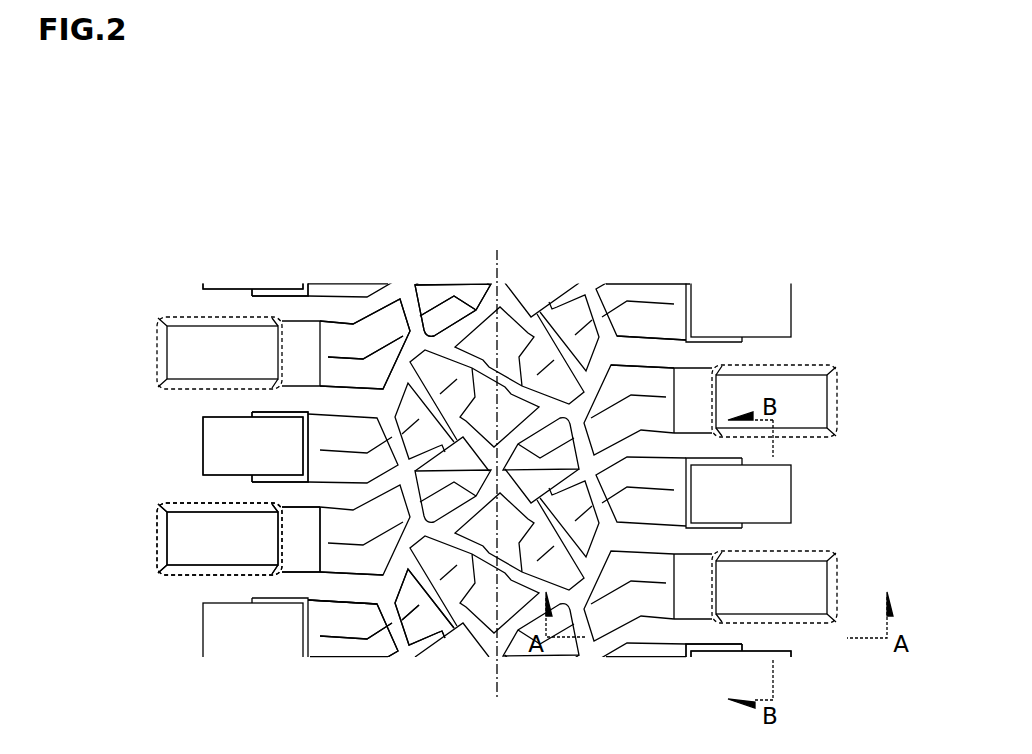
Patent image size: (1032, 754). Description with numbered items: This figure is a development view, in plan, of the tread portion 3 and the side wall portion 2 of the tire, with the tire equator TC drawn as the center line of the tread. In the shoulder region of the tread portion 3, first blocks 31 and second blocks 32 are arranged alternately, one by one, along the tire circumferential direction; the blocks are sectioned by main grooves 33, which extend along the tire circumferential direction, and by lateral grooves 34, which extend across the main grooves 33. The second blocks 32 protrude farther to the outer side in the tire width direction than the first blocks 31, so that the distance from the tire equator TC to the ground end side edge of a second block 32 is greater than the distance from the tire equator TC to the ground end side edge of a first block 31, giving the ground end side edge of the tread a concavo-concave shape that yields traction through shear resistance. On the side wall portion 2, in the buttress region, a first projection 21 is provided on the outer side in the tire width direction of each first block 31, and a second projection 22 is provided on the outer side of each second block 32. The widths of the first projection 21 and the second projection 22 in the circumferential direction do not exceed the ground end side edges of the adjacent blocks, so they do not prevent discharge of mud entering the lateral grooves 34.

The side wall portion 2 is at (162, 281).
The tread portion 3 is at (438, 260).
The first projection 21 is at (181, 358).
The second projection 22 is at (217, 450).
The first block 31 is at (345, 345).
The second block 32 is at (655, 320).
The main groove 33 is at (400, 652).
The lateral groove 34 is at (332, 590).
The tire equator TC is at (496, 457).